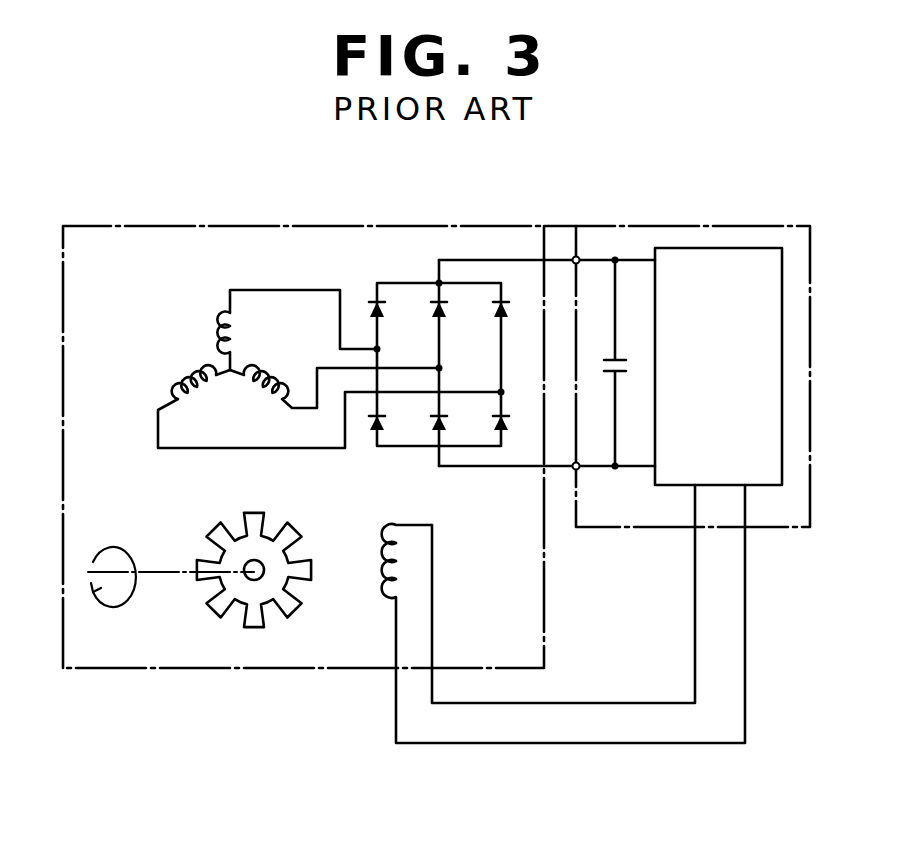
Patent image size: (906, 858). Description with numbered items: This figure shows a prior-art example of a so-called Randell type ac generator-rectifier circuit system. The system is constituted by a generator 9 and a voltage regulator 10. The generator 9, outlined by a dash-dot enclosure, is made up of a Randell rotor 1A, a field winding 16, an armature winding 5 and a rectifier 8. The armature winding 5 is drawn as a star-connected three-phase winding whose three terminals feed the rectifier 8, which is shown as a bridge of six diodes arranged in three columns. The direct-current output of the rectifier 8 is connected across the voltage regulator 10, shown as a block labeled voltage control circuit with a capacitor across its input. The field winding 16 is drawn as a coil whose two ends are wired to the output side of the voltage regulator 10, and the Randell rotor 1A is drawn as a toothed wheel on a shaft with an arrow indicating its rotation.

The generator 9 is at (63, 342).
The Randell rotor 1A is at (205, 552).
The armature winding 5 is at (198, 362).
The rectifier 8 is at (403, 270).
The voltage regulator 10 is at (782, 368).
The field winding 16 is at (402, 523).